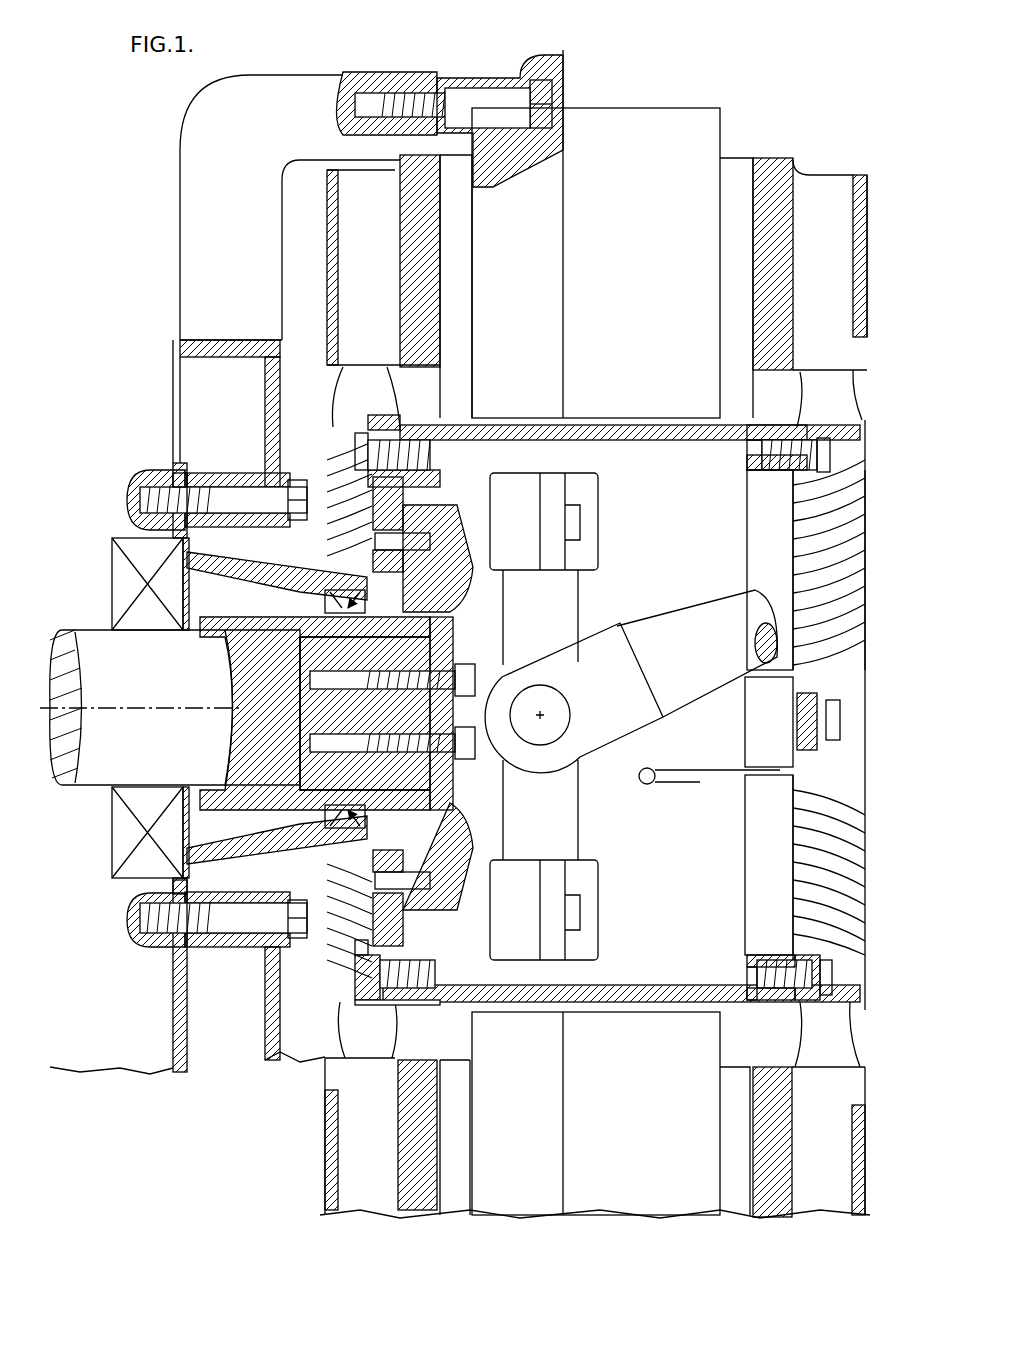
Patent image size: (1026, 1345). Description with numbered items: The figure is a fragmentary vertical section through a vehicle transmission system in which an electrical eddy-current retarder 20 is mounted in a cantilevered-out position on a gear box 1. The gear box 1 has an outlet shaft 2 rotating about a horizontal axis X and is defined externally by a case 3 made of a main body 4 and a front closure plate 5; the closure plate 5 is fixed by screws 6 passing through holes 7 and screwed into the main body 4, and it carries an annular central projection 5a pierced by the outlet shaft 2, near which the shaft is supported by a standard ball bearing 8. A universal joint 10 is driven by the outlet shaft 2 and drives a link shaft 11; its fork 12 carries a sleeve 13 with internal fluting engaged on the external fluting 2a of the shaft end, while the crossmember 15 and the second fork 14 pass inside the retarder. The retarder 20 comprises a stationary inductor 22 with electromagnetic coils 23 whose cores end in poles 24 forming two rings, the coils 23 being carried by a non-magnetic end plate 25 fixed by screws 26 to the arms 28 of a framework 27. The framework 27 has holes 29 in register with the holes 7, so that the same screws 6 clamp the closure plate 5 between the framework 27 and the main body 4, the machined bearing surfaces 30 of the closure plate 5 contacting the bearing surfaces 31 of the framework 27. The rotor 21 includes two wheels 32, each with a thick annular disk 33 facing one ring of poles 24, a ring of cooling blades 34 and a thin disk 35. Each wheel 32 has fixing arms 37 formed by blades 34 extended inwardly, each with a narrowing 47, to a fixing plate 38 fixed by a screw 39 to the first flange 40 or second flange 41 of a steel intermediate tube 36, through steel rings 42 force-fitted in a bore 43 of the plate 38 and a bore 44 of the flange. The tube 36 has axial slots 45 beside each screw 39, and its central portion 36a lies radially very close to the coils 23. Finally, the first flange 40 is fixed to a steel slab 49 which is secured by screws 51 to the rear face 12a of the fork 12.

The gear box 1 is at (108, 378).
The outlet shaft 2 is at (108, 772).
The external fluting 2a is at (245, 785).
The case 3 is at (113, 336).
The main body 4 is at (183, 340).
The closure plate 5 is at (180, 1072).
The annular central projection 5a is at (300, 858).
The screws 6 is at (297, 480).
The holes 7 is at (170, 478).
The ball bearing 8 is at (125, 562).
The universal joint 10 is at (605, 622).
The link shaft 11 is at (688, 625).
The fork 12 is at (470, 575).
The rear face 12a is at (440, 522).
The sleeve 13 is at (240, 640).
The fork 14 is at (592, 728).
The crossmember 15 is at (550, 818).
The electrical eddy-current retarder 20 is at (612, 100).
The rotor 21 is at (870, 495).
The inductor 22 is at (665, 108).
The electromagnetic coils 23 is at (688, 128).
The poles 24 is at (455, 242).
The end plate 25 is at (538, 56).
The screws 26 is at (555, 108).
The framework 27 is at (240, 340).
The arms 28 is at (385, 80).
The holes 29 is at (232, 473).
The annular bearing surfaces 30 is at (180, 476).
The machined bearing surfaces 31 is at (190, 480).
The wheels 32 is at (325, 1080).
The annular disk 33 is at (422, 1195).
The blades 34 is at (340, 228).
The thin disk 35 is at (325, 1150).
The intermediate tube 36 is at (700, 845).
The central portion 36a is at (688, 985).
The fixing arms 37 is at (395, 400).
The fixing plate 38 is at (368, 1003).
The screw 39 is at (842, 718).
The first flange 40 is at (420, 930).
The second flange 41 is at (768, 488).
The steel rings 42 is at (405, 1003).
The bore 43 is at (340, 1015).
The bore 44 is at (760, 962).
The slots 45 is at (745, 683).
The narrowing 47 is at (365, 385).
The steel slab 49 is at (400, 492).
The screws 51 is at (420, 598).